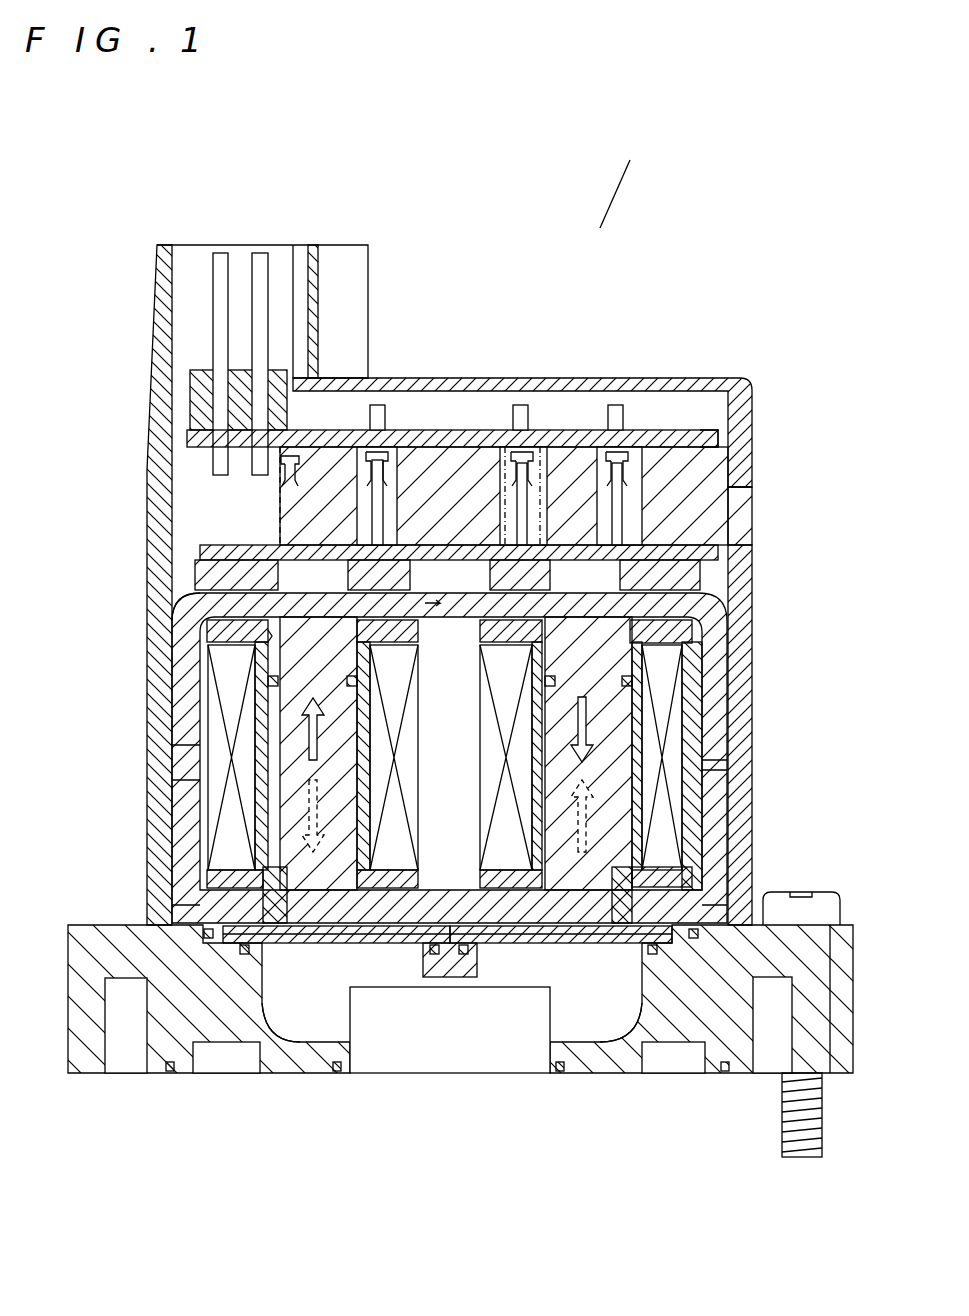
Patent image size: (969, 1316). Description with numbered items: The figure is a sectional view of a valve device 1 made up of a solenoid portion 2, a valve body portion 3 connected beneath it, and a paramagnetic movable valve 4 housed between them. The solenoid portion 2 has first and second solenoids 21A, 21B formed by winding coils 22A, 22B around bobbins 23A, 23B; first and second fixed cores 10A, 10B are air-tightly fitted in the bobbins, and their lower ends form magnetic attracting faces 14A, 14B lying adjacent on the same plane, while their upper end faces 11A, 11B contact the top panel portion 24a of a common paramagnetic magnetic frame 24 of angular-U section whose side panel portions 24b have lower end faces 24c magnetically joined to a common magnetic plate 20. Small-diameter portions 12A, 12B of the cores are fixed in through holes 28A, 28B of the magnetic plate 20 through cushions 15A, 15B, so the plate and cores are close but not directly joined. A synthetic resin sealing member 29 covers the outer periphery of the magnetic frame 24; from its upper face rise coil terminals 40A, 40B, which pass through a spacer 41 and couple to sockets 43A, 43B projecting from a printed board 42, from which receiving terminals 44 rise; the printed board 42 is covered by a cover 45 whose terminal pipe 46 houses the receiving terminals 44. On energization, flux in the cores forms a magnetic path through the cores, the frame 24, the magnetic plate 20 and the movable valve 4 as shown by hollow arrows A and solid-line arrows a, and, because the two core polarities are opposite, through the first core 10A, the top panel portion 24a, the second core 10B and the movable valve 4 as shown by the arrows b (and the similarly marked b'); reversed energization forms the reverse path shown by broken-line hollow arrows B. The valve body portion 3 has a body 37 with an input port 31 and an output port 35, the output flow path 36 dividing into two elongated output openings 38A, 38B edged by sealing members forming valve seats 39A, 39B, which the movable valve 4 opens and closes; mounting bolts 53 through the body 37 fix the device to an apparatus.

The valve device 1 is at (626, 174).
The solenoid portion 2 is at (498, 585).
The valve body portion 3 is at (470, 1077).
The movable valve 4 is at (160, 1073).
The first fixed core 10A is at (208, 753).
The second fixed core 10B is at (600, 705).
The end face of first fixed core 11A is at (255, 562).
The end face of second fixed core 11B is at (690, 528).
The small-diameter portion of first fixed core 12A is at (320, 943).
The small-diameter portion of second fixed core 12B is at (570, 943).
The magnetic attracting face of first fixed core 14A is at (378, 943).
The magnetic attracting face of second fixed core 14B is at (522, 943).
The cushion 15A is at (235, 880).
The cushion 15B is at (665, 880).
The magnetic plate 20 is at (740, 925).
The first solenoid 21A is at (148, 737).
The second solenoid 21B is at (759, 737).
The coil 22A is at (230, 668).
The coil 22B is at (665, 660).
The bobbin 23A is at (205, 630).
The bobbin 23B is at (694, 630).
The magnetic frame 24 is at (712, 738).
The top panel portion 24a is at (745, 498).
The side panel portions 24b is at (178, 792).
The lower end faces 24c is at (185, 905).
The through hole 28A is at (272, 890).
The through hole 28B is at (625, 885).
The sealing member 29 is at (165, 592).
The input port 31 is at (225, 1062).
The output port 35 is at (468, 1073).
The output flow path 36 is at (445, 977).
The body 37 is at (853, 1000).
The output opening 38A is at (275, 1030).
The output opening 38B is at (628, 1030).
The valve seat 39A is at (170, 1073).
The valve seat 39B is at (712, 1045).
The coil terminals 40A is at (300, 498).
The coil terminals 40B is at (560, 480).
The spacer 41 is at (714, 440).
The printed board 42 is at (520, 405).
The sockets 43A is at (380, 452).
The sockets 43B is at (622, 455).
The receiving terminals 44 is at (261, 264).
The cover 45 is at (474, 430).
The terminal pipe 46 is at (172, 295).
The mounting bolts 53 is at (805, 1140).
The solid-line arrows a is at (185, 745).
The solid-line arrows b is at (443, 573).
The gap b' is at (395, 960).
The hollow arrows A is at (322, 729).
The broken-line hollow arrows B is at (322, 816).